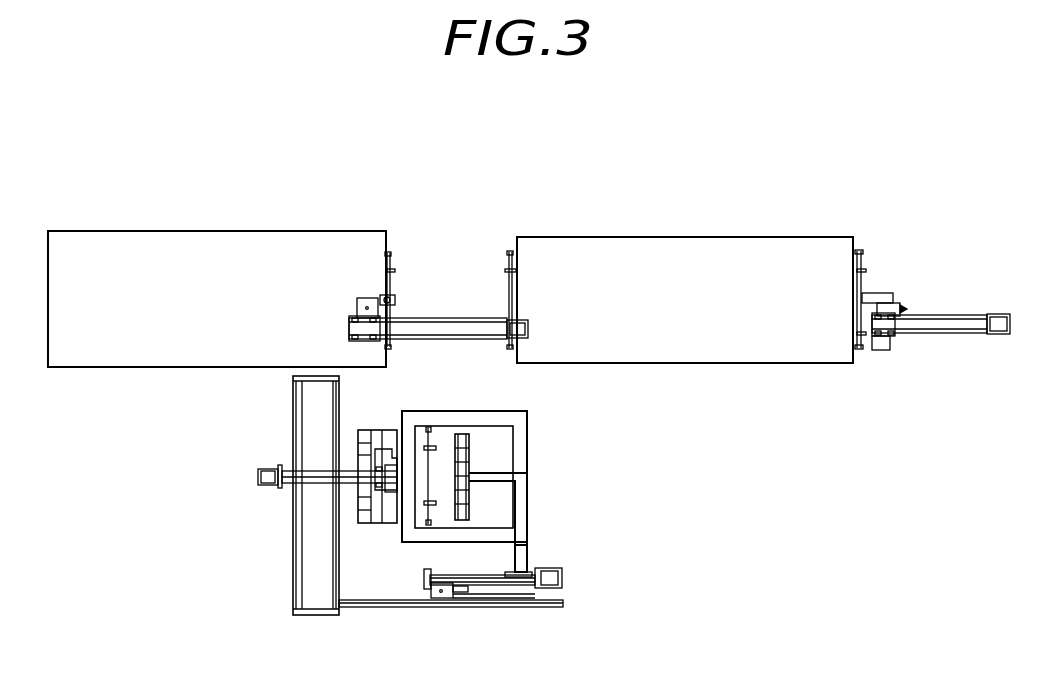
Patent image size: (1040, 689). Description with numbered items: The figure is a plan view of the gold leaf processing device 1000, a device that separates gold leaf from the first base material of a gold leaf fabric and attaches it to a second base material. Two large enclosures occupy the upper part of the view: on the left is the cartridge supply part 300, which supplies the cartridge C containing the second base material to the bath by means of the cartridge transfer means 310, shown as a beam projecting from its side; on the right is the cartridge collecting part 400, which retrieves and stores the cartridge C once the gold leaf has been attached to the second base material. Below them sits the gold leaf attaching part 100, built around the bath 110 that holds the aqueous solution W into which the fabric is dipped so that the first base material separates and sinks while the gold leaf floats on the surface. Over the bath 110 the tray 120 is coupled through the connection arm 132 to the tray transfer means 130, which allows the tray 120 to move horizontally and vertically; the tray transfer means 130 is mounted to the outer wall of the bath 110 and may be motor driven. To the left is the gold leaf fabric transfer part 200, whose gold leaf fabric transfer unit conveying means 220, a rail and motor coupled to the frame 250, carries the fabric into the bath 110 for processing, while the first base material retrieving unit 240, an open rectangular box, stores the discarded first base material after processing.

The gold leaf processing device 1000 is at (122, 130).
The cartridge supply part 300 is at (219, 224).
The cartridge transfer means 310 is at (438, 326).
The cartridge collecting part 400 is at (677, 230).
The gold leaf attaching part 100 is at (530, 486).
The bath 110 is at (520, 432).
The tray 120 is at (461, 440).
The cartridge C is at (440, 441).
The aqueous solution W is at (503, 489).
The connection arm 132 is at (527, 552).
The tray transfer means 130 is at (580, 598).
The gold leaf fabric transfer part 200 is at (380, 550).
The first base material retrieving unit 240 is at (386, 512).
The gold leaf fabric transfer unit conveying means 220 is at (258, 475).
The frame 250 is at (295, 546).